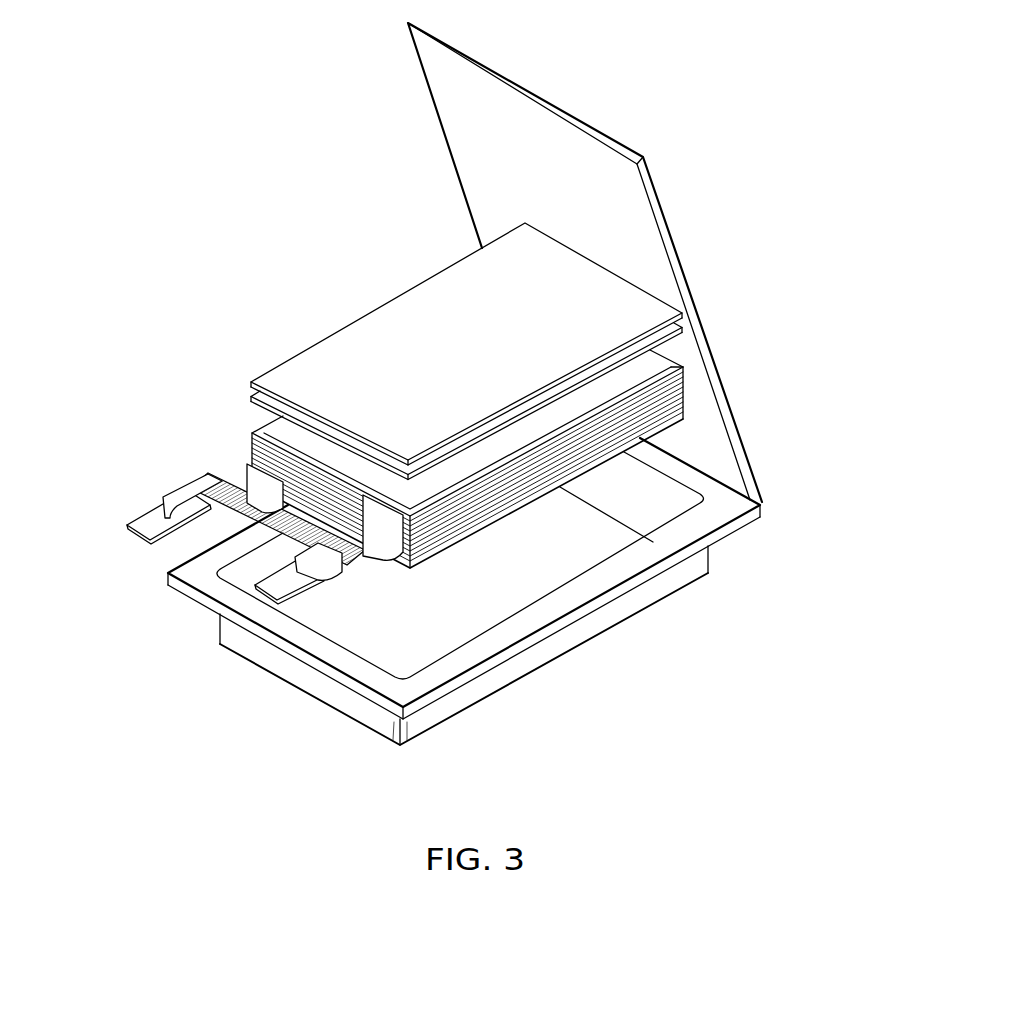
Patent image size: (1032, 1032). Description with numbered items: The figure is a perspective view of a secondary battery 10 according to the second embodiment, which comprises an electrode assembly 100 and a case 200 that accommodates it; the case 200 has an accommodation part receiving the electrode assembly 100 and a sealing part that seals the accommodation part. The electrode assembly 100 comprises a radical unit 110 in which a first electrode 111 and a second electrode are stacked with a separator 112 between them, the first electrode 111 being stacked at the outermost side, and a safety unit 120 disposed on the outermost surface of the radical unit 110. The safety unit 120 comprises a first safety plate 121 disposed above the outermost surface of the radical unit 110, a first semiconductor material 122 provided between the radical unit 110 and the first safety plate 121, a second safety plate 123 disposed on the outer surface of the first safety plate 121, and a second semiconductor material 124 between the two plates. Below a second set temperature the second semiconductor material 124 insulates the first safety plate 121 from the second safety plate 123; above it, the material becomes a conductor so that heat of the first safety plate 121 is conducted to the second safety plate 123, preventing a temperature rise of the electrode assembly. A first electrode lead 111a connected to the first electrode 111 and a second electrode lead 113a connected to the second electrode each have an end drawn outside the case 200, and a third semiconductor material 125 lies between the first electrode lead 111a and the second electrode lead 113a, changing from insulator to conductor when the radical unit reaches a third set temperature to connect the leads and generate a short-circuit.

The secondary battery 10 is at (233, 220).
The electrode assembly 100 is at (858, 275).
The radical unit 110 is at (792, 355).
The first electrode 111 is at (653, 362).
The first electrode lead 111a is at (270, 588).
The separator 112 is at (683, 367).
The second electrode lead 113a is at (142, 523).
The safety unit 120 is at (792, 220).
The first safety plate 121 is at (683, 329).
The first semiconductor material 122 is at (683, 333).
The second safety plate 123 is at (683, 312).
The second semiconductor material 124 is at (683, 318).
The third semiconductor material 125 is at (167, 520).
The case 200 is at (778, 500).